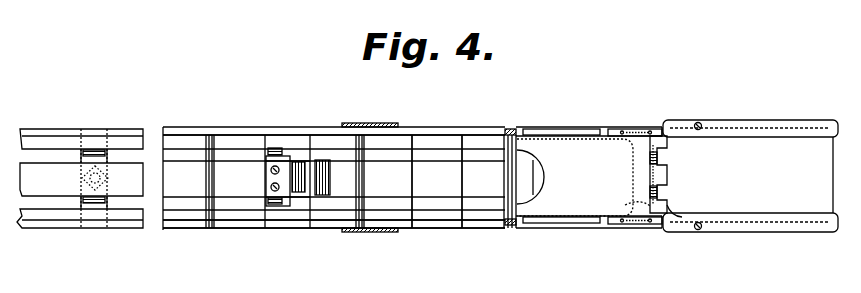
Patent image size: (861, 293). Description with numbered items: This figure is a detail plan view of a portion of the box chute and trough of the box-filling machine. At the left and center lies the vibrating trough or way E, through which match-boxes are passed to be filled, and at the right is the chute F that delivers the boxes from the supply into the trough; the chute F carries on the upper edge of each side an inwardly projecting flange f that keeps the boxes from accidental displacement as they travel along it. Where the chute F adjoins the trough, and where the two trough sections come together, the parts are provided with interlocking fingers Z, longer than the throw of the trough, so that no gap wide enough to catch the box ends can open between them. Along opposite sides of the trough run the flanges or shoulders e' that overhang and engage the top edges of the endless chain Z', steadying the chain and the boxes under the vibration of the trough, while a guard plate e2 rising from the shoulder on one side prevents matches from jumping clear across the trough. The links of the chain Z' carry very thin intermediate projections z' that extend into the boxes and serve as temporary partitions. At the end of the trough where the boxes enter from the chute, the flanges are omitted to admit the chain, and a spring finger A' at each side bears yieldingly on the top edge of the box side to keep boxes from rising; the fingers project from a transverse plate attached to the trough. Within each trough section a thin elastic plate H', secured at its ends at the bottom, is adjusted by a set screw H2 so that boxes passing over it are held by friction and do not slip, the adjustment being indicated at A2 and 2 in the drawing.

The vibrating trough or way E is at (80, 190).
The set screw H2 is at (82, 178).
The thin elastic plate H' is at (278, 177).
The flange or shoulder e' is at (334, 185).
The guard plate e2 is at (186, 224).
The endless chain Z' is at (412, 167).
The intermediate projections z' is at (446, 181).
The post 2 is at (356, 177).
The spring finger A' is at (589, 179).
The drawhead lug A2 is at (640, 200).
The interlocking fingers Z is at (668, 174).
The chute F is at (750, 187).
The inwardly projecting flange f is at (738, 136).